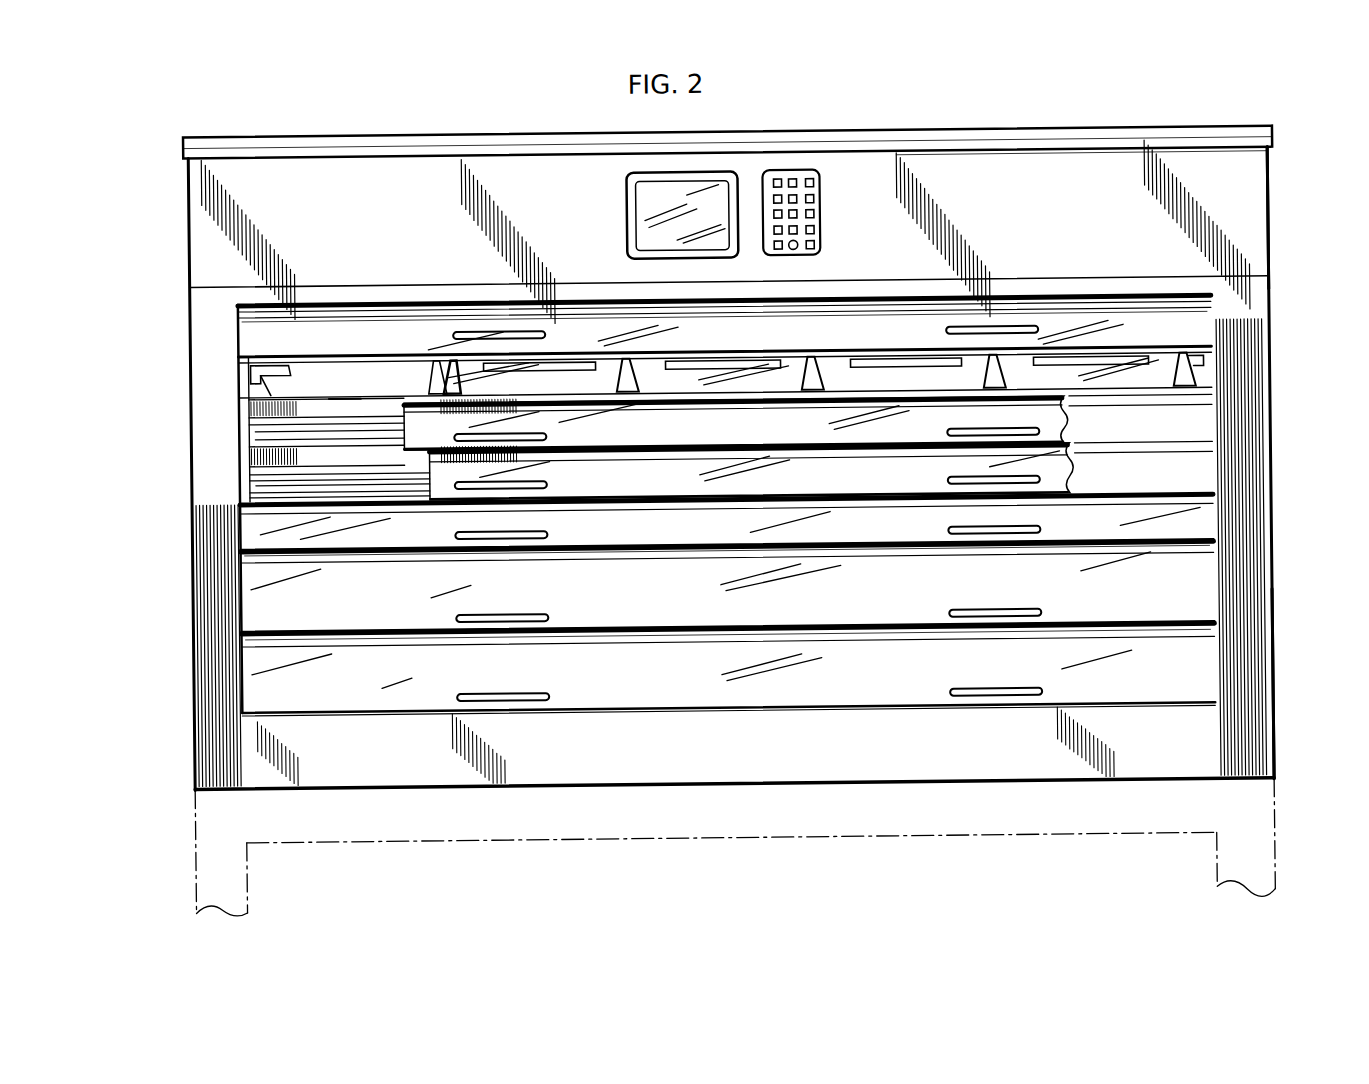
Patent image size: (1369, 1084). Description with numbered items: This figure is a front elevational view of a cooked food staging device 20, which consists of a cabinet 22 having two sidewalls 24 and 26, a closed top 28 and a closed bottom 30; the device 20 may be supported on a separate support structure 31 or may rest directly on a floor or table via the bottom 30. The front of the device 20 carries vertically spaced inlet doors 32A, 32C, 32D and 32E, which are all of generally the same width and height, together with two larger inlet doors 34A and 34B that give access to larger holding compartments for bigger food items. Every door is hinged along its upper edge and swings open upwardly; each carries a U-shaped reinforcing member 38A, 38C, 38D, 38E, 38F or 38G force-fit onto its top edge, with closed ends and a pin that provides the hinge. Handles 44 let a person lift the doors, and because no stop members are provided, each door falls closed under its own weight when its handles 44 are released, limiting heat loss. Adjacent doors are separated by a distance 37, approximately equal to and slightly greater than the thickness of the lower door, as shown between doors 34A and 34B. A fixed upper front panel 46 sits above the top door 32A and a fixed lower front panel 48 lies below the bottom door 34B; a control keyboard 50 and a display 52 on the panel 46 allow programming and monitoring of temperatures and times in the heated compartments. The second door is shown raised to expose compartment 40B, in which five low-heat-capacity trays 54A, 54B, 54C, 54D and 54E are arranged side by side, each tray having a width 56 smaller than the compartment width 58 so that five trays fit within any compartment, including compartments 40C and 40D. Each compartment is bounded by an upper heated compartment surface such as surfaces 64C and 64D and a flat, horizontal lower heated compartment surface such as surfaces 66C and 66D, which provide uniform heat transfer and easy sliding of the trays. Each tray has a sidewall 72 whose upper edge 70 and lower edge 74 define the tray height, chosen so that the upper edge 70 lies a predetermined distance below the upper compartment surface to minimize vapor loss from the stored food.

The cooked food staging device 20 is at (852, 133).
The cabinet 22 is at (1309, 101).
The sidewall 24 is at (186, 226).
The sidewall 26 is at (1287, 209).
The closed top 28 is at (441, 136).
The closed bottom 30 is at (500, 798).
The support structure 31 is at (878, 833).
The inlet door 32A is at (1205, 325).
The inlet door 32C is at (1190, 420).
The inlet door 32D is at (1195, 483).
The inlet door 32E is at (1200, 528).
The inlet door 34A is at (1175, 588).
The inlet door 34B is at (1182, 690).
The distance 37 is at (1277, 678).
The reinforcing member 38A is at (363, 305).
The reinforcing member 38C is at (725, 412).
The reinforcing member 38D is at (710, 462).
The reinforcing member 38E is at (248, 513).
The reinforcing member 38F is at (360, 560).
The reinforcing member 38G is at (360, 642).
The heated compartment 40B is at (252, 392).
The heated compartment 40C is at (396, 470).
The heated compartment 40D is at (292, 482).
The handle 44 is at (485, 334).
The fixed upper front panel 46 is at (1074, 170).
The fixed lower front panel 48 is at (657, 766).
The control keyboard 50 is at (826, 214).
The display 52 is at (650, 216).
The tray 54A is at (250, 360).
The tray 54B is at (583, 370).
The tray 54C is at (748, 370).
The tray 54D is at (882, 370).
The tray 54E is at (1120, 370).
The tray width 56 is at (440, 352).
The compartment width 58 is at (247, 752).
The upper heated compartment surface 64C is at (258, 438).
The upper heated compartment surface 64D is at (258, 481).
The lower heated compartment surface 66C is at (405, 465).
The lower heated compartment surface 66D is at (405, 493).
The upper edge 70 is at (1200, 370).
The sidewall 72 is at (345, 402).
The lower edge 74 is at (260, 410).